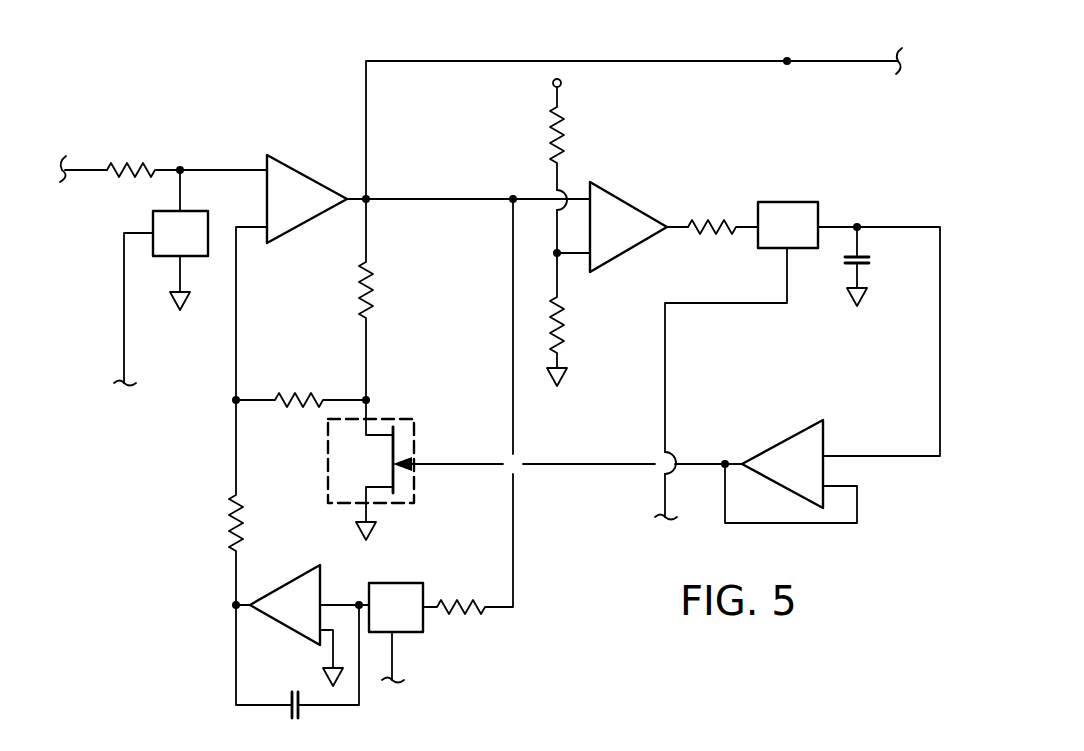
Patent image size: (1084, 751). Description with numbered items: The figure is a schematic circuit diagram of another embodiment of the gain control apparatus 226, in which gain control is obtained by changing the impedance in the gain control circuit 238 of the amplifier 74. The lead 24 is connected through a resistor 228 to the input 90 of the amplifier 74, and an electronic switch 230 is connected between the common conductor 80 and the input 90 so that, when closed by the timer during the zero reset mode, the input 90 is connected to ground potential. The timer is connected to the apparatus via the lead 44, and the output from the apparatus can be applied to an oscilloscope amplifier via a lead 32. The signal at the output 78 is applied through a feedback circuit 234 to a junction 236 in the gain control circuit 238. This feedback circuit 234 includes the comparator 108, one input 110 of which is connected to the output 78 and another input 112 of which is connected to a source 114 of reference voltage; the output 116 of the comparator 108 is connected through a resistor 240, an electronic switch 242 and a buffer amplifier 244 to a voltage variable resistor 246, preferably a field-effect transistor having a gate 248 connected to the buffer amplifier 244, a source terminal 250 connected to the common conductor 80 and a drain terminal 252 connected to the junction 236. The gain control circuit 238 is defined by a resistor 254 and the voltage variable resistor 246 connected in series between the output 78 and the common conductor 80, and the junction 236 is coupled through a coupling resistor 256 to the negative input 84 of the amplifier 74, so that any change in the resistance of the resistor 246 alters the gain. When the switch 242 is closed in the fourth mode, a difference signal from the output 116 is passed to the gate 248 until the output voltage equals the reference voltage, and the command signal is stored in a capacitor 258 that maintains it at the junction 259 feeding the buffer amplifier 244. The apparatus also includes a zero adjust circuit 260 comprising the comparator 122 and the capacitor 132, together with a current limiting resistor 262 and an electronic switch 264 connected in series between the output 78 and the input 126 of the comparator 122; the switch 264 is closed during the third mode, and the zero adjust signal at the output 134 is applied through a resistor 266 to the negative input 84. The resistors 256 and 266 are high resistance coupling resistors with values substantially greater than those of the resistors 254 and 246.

The gain control apparatus 226 is at (226, 90).
The lead 24 is at (68, 170).
The resistor 228 is at (128, 164).
The input of the amplifier 90 is at (252, 169).
The electronic switch 230 is at (153, 221).
The amplifier 74 is at (300, 175).
The output of the amplifier 78 is at (354, 195).
The negative input of the amplifier 84 is at (258, 232).
The lead 32 is at (832, 61).
The resistor 254 is at (372, 306).
The gain control circuit 238 is at (385, 346).
The coupling resistor 256 is at (300, 396).
The junction 236 is at (372, 400).
The voltage variable resistor 246 is at (416, 436).
The drain terminal 252 is at (362, 427).
The source terminal 250 is at (362, 497).
The gate 248 is at (412, 472).
The resistor 266 is at (232, 528).
The comparator 122 is at (298, 580).
The output of the comparator 134 is at (236, 600).
The input of the comparator 126 is at (351, 579).
The capacitor 132 is at (290, 700).
The electronic switch 264 is at (388, 583).
The resistor 262 is at (462, 600).
The zero adjust circuit 260 is at (478, 625).
The source of reference voltage 114 is at (535, 176).
The input of the comparator 110 is at (568, 193).
The comparator 108 is at (612, 207).
The input of the comparator 112 is at (574, 257).
The output of the comparator 116 is at (678, 224).
The resistor 240 is at (693, 230).
The feedback circuit 234 is at (822, 152).
The electronic switch 242 is at (775, 203).
The junction 259 is at (859, 225).
The capacitor 258 is at (864, 260).
The buffer amplifier 244 is at (780, 446).
The common conductor 80 is at (184, 306).
The lead 44 is at (124, 344).